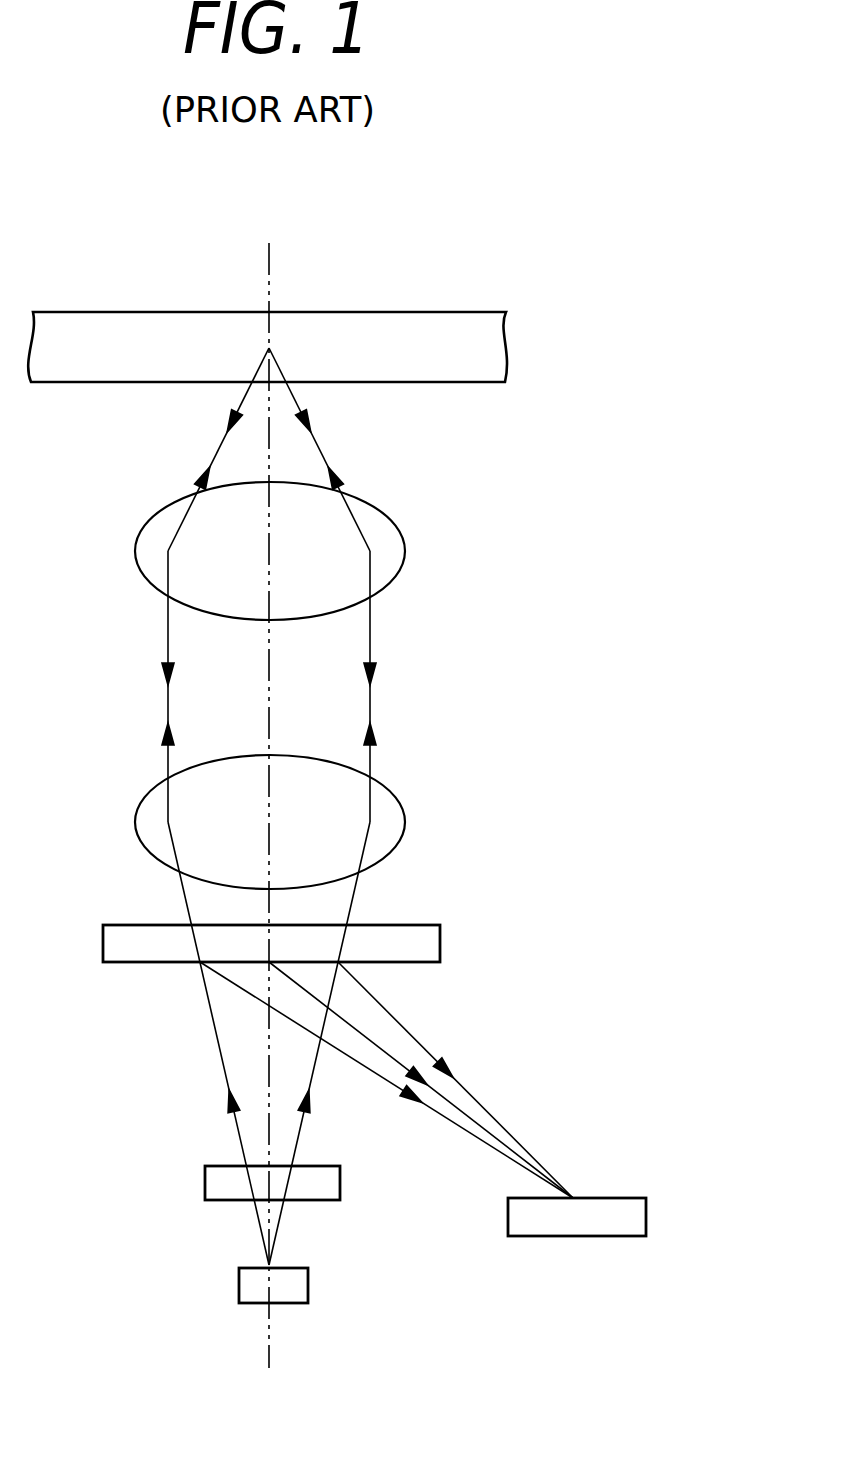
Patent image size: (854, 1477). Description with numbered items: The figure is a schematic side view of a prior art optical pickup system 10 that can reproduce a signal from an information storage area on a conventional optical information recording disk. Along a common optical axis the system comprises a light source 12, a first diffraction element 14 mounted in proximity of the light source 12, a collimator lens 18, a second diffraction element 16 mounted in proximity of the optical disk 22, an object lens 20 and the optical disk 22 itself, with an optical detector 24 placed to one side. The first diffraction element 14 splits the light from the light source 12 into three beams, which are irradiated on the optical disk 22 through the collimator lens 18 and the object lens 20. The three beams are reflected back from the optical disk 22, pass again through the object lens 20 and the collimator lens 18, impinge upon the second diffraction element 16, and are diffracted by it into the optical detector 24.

The optical pickup system 10 is at (512, 203).
The light source 12 is at (237, 1278).
The first diffraction element 14 is at (308, 1202).
The second diffraction element 16 is at (390, 962).
The collimator lens 18 is at (395, 818).
The object lens 20 is at (393, 533).
The optical disk 22 is at (482, 316).
The optical detector 24 is at (620, 1198).